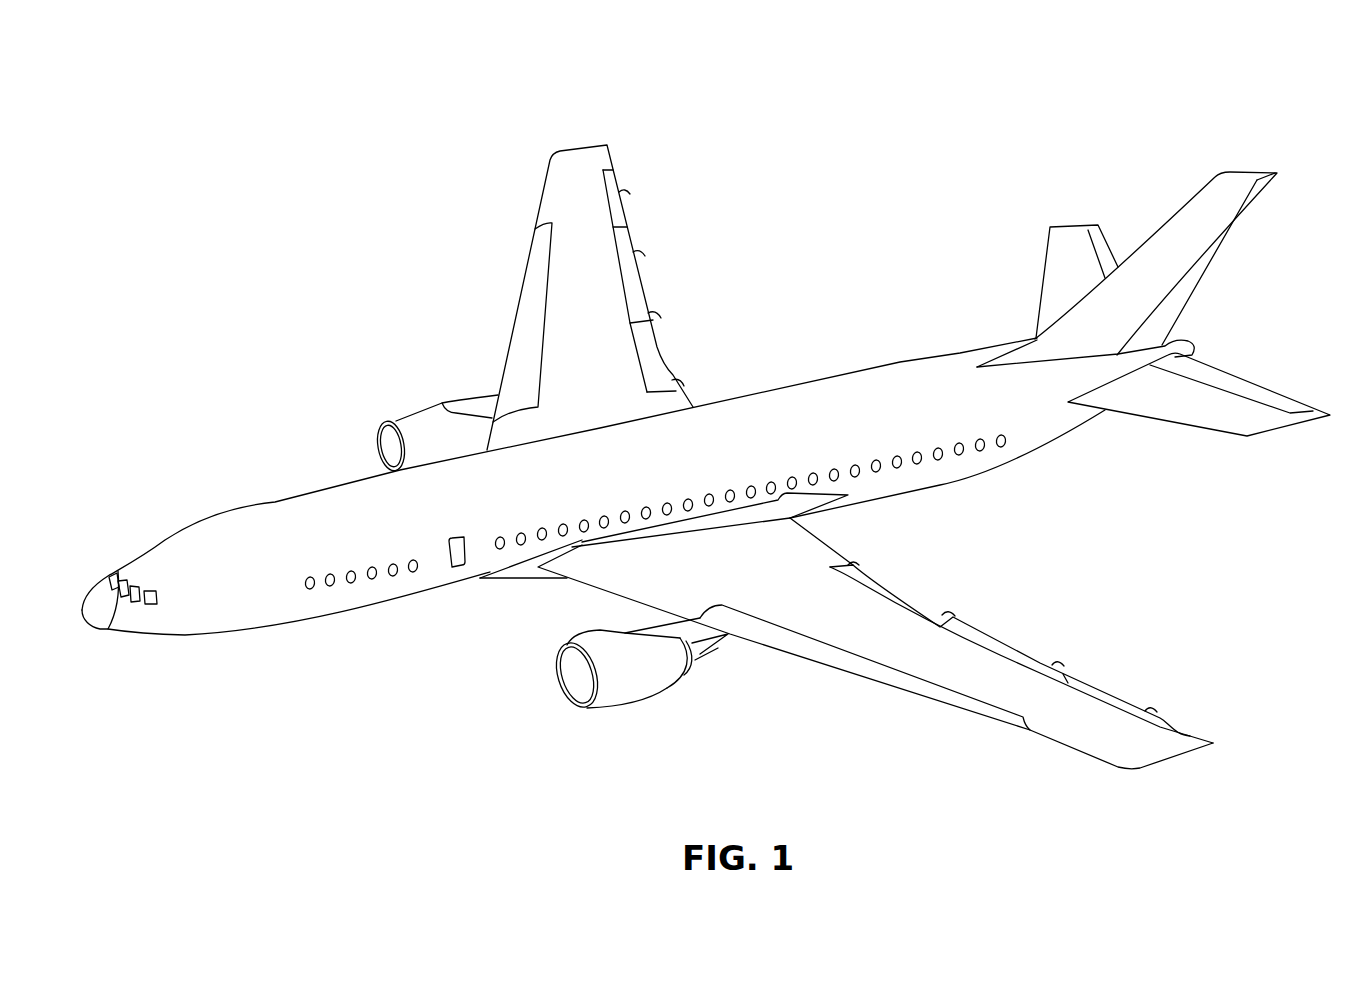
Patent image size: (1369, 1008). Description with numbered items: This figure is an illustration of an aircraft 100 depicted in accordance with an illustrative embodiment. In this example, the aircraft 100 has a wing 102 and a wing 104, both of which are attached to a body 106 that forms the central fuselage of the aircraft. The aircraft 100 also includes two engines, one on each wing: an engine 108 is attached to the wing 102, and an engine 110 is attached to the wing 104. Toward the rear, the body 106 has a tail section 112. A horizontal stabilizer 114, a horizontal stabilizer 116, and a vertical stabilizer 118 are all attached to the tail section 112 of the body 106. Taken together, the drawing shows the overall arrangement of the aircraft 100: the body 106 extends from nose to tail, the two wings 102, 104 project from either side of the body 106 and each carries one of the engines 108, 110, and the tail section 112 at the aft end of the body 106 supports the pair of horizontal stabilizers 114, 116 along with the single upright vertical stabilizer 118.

The aircraft 100 is at (320, 116).
The wing 102 is at (541, 197).
The wing 104 is at (1090, 742).
The body 106 is at (193, 532).
The engine 108 is at (407, 407).
The engine 110 is at (625, 708).
The tail section 112 is at (1119, 459).
The horizontal stabilizer 114 is at (1058, 267).
The horizontal stabilizer 116 is at (1227, 418).
The vertical stabilizer 118 is at (1238, 231).